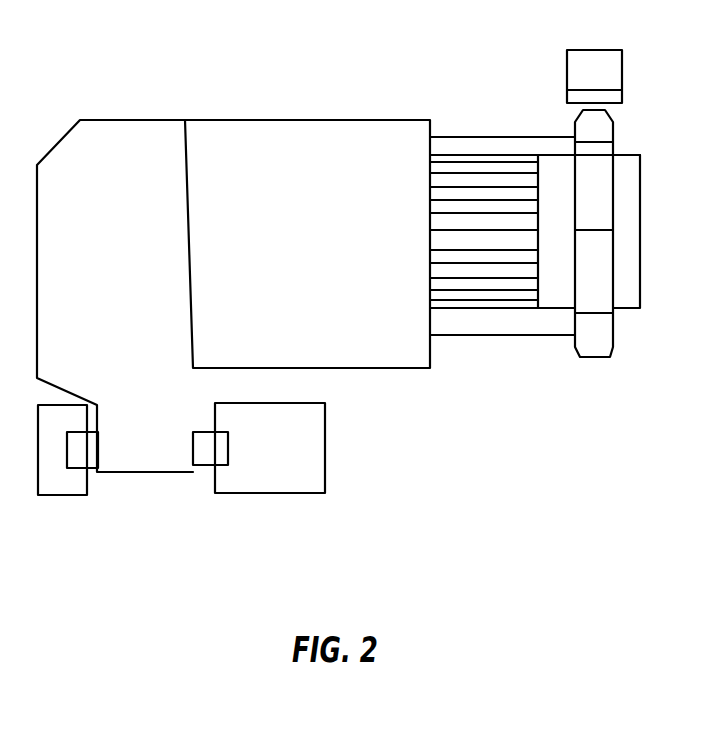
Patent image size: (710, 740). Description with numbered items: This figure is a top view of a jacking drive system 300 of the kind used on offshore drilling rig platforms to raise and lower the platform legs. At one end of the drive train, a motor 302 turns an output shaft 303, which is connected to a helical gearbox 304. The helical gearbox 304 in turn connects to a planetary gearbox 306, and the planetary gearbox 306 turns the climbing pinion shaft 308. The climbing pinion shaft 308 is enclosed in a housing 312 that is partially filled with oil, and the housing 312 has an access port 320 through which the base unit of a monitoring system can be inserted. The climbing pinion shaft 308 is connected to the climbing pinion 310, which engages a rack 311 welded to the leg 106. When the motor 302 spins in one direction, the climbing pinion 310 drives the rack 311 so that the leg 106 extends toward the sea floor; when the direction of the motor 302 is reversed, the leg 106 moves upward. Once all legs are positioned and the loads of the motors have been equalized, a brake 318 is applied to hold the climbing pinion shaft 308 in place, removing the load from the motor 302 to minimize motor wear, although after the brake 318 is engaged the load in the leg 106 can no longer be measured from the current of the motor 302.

The jacking drive system 300 is at (147, 87).
The helical gearbox 304 is at (108, 137).
The planetary gearbox 306 is at (247, 145).
The housing 312 is at (518, 142).
The access port 320 is at (538, 322).
The climbing pinion shaft 308 is at (555, 167).
The climbing pinion 310 is at (578, 352).
The leg 106 is at (578, 73).
The rack 311 is at (622, 100).
The brake 318 is at (68, 475).
The motor 302 is at (315, 460).
The output shaft 303 is at (205, 468).